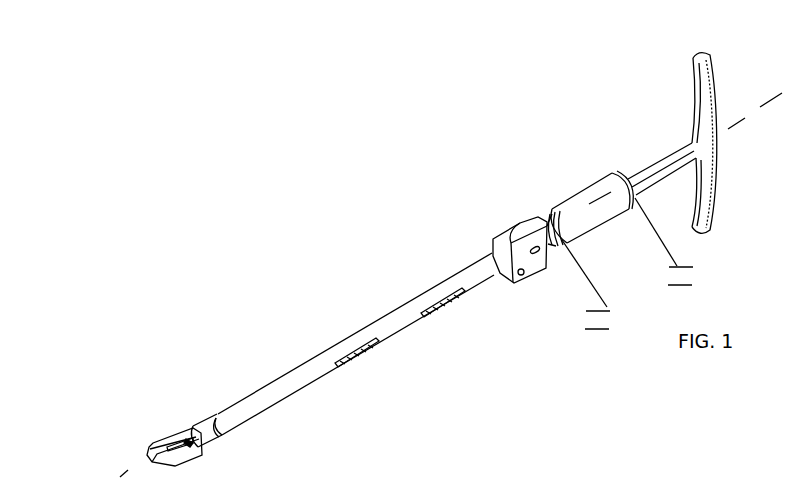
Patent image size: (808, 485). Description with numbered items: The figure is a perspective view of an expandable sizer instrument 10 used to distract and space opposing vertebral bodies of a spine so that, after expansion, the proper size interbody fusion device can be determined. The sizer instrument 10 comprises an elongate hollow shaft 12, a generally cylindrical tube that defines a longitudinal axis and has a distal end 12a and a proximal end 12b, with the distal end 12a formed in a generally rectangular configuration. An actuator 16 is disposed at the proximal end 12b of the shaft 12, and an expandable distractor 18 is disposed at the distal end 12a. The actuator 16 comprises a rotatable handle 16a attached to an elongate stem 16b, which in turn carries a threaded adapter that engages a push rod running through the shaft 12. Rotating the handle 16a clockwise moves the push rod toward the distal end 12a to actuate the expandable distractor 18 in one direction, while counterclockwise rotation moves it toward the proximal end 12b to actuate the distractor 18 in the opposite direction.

The sizer instrument 10 is at (372, 240).
The elongate hollow shaft 12 is at (313, 375).
The distal end 12a is at (197, 423).
The proximal end 12b is at (480, 262).
The actuator 16 is at (680, 122).
The rotatable handle 16a is at (718, 98).
The elongate stem 16b is at (650, 168).
The expandable distractor 18 is at (163, 441).